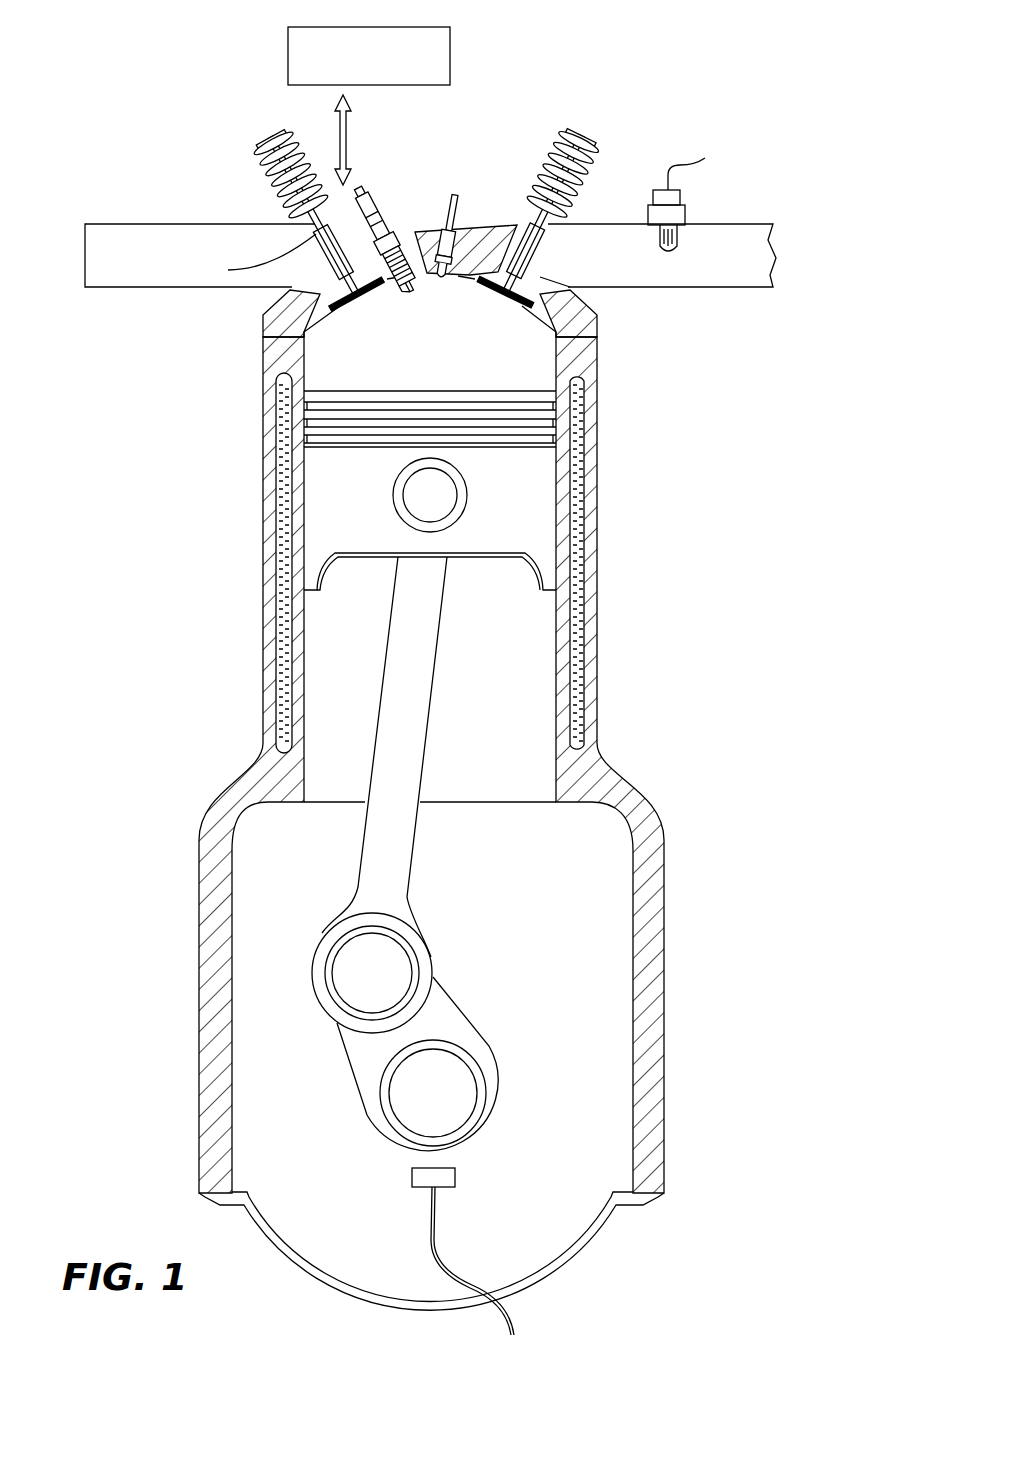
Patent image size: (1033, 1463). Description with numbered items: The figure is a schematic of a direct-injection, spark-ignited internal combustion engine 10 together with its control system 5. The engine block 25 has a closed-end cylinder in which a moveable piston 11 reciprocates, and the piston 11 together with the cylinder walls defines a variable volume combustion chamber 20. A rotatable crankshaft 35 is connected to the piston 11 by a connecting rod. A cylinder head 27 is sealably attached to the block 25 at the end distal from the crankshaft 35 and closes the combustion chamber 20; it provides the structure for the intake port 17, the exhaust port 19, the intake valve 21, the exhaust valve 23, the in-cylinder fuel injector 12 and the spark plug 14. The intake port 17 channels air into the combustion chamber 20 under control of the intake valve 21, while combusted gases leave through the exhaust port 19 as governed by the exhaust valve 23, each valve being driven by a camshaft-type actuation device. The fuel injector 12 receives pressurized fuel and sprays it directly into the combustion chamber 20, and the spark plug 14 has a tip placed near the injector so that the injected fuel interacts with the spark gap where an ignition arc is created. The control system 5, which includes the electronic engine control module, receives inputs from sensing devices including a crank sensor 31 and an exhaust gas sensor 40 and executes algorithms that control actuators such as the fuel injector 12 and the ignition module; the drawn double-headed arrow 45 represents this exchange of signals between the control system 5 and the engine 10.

The control system 5 is at (445, 37).
The internal combustion engine 10 is at (166, 446).
The piston 11 is at (528, 495).
The fuel injector 12 is at (450, 218).
The spark plug 14 is at (375, 205).
The intake port 17 is at (322, 277).
The exhaust port 19 is at (540, 277).
The combustion chamber 20 is at (430, 316).
The intake valve 21 is at (293, 217).
The exhaust valve 23 is at (537, 260).
The engine block 25 is at (590, 445).
The cylinder head 27 is at (580, 325).
The crank sensor 31 is at (412, 1181).
The crankshaft 35 is at (375, 1093).
The exhaust gas sensor 40 is at (690, 212).
The control signal 45 is at (345, 140).